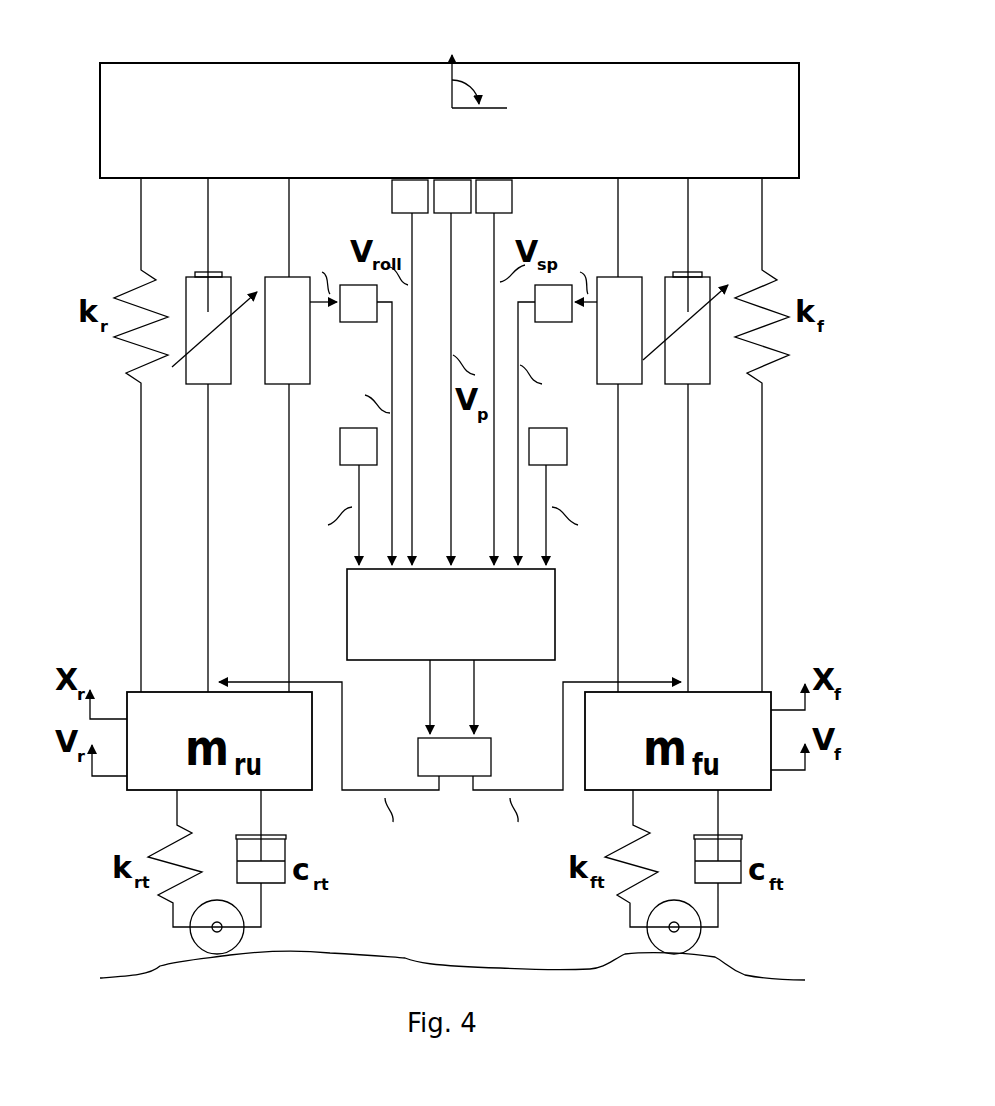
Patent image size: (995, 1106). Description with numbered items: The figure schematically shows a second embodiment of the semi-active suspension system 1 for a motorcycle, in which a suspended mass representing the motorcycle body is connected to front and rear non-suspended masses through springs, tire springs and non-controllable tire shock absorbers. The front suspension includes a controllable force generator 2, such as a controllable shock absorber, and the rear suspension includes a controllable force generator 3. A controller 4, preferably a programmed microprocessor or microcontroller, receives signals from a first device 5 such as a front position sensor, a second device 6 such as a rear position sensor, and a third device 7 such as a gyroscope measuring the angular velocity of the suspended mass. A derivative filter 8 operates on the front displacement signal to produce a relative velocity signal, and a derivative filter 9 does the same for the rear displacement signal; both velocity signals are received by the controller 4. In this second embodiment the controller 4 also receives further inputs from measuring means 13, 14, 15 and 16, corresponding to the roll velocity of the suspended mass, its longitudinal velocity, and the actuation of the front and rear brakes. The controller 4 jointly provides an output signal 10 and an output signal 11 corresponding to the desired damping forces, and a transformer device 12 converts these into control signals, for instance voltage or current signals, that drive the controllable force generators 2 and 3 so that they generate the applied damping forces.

The semi-active suspension system 1 is at (545, 48).
The controllable force generator 2 is at (692, 384).
The controllable force generator 3 is at (200, 384).
The controller 4 is at (347, 632).
The first device 5 is at (620, 384).
The second device 6 is at (280, 384).
The third device 7 is at (455, 216).
The derivative filter 8 is at (555, 322).
The derivative filter 9 is at (355, 322).
The output signal 10 is at (470, 713).
The output signal 11 is at (428, 713).
The transformer device 12 is at (491, 755).
The measuring means 13 is at (388, 197).
The measuring means 14 is at (512, 190).
The measuring means 15 is at (567, 445).
The measuring means 16 is at (340, 442).